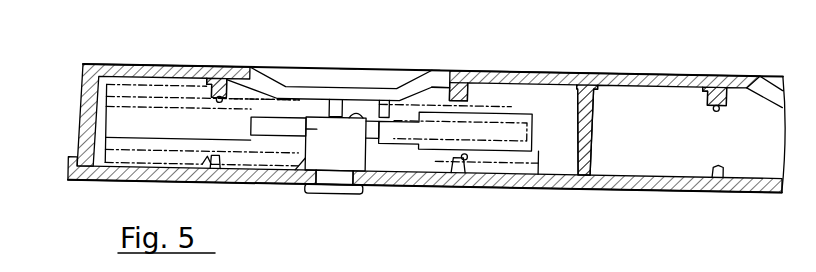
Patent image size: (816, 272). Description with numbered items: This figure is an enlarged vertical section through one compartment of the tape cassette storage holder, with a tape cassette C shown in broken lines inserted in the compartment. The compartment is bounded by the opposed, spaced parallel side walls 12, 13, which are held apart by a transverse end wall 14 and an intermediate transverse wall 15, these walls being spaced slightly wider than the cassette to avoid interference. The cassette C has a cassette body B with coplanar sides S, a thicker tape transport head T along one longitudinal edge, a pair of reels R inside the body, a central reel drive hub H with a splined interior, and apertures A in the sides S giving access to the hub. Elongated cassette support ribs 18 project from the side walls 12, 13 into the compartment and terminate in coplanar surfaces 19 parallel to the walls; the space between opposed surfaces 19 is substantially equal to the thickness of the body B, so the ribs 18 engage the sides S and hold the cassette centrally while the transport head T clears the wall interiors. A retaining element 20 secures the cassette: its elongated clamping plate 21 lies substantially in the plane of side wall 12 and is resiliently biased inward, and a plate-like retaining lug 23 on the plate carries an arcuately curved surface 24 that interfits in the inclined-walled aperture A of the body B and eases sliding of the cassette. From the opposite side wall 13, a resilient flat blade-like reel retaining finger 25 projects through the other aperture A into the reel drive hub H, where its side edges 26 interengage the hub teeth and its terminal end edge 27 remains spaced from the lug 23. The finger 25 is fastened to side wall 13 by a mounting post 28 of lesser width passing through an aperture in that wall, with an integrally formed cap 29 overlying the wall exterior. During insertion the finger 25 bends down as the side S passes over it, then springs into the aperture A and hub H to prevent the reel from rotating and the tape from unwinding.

The side wall 12 is at (616, 72).
The side wall 13 is at (647, 193).
The end wall 14 is at (81, 132).
The intermediate transverse wall 15 is at (592, 138).
The cassette support rib 18 is at (236, 66).
The surface 19 is at (228, 97).
The retaining element 20 is at (348, 66).
The clamping plate 21 is at (295, 68).
The retaining lug 23 is at (332, 100).
The arcuately curved surface 24 is at (353, 117).
The reel retaining finger 25 is at (300, 168).
The side edge 26 is at (368, 148).
The terminal end edge 27 is at (352, 118).
The mounting post 28 is at (330, 180).
The cap 29 is at (333, 192).
The tape transport head T is at (125, 80).
The cassette body side S is at (506, 104).
The reel R is at (278, 105).
The tape cassette C is at (542, 168).
The cassette body B is at (533, 97).
The aperture A is at (430, 62).
The reel drive hub H is at (320, 133).